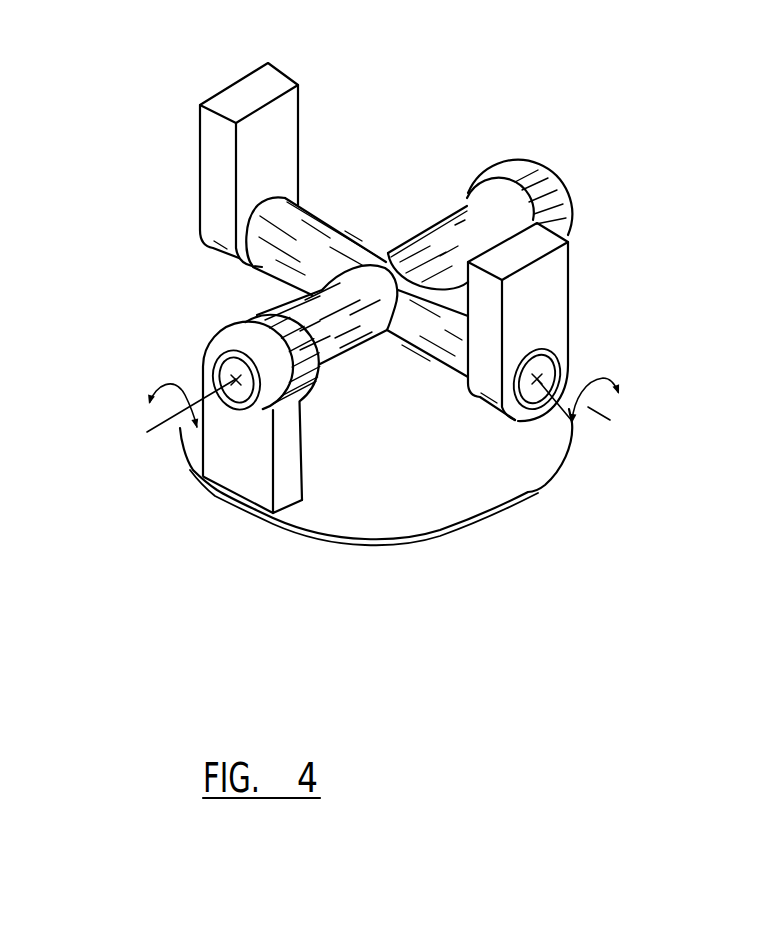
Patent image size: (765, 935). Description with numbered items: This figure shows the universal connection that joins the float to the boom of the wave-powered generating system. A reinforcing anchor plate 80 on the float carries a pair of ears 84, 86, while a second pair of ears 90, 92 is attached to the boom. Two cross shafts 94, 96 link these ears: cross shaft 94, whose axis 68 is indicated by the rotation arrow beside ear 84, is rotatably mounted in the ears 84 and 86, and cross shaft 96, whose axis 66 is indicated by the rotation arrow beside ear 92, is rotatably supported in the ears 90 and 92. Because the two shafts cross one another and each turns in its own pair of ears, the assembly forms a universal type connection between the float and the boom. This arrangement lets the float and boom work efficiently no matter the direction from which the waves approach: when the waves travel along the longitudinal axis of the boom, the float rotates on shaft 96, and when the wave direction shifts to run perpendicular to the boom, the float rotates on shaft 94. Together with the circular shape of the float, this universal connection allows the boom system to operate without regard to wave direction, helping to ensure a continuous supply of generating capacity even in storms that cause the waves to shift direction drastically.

The axis 66 is at (575, 423).
The axis 68 is at (236, 379).
The reinforcing anchor plate 80 is at (365, 515).
The ear 84 is at (230, 456).
The ear 86 is at (519, 182).
The ear 90 is at (257, 90).
The ear 92 is at (540, 312).
The cross shaft 94 is at (330, 317).
The cross shaft 96 is at (450, 247).